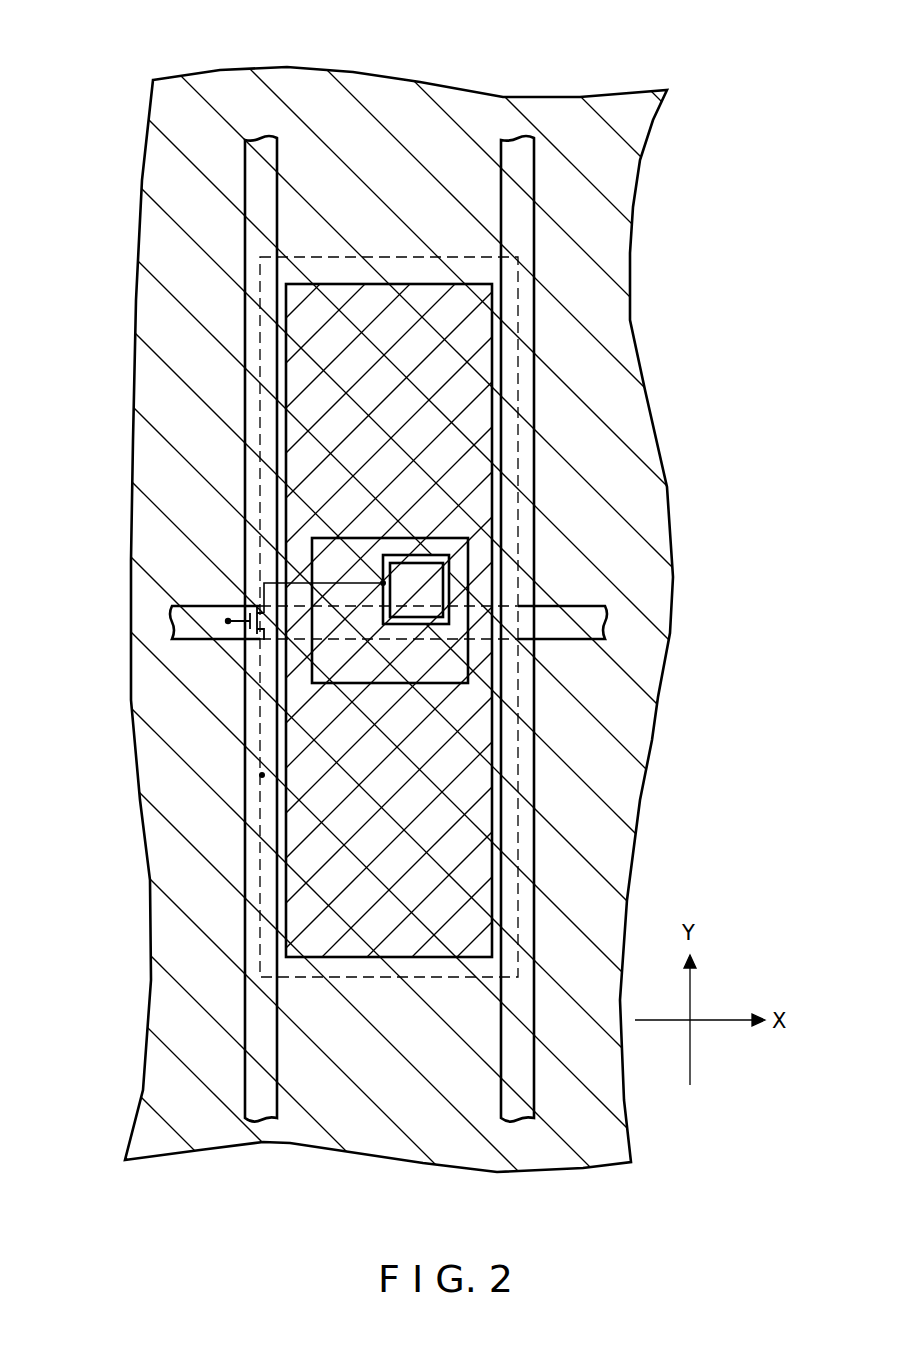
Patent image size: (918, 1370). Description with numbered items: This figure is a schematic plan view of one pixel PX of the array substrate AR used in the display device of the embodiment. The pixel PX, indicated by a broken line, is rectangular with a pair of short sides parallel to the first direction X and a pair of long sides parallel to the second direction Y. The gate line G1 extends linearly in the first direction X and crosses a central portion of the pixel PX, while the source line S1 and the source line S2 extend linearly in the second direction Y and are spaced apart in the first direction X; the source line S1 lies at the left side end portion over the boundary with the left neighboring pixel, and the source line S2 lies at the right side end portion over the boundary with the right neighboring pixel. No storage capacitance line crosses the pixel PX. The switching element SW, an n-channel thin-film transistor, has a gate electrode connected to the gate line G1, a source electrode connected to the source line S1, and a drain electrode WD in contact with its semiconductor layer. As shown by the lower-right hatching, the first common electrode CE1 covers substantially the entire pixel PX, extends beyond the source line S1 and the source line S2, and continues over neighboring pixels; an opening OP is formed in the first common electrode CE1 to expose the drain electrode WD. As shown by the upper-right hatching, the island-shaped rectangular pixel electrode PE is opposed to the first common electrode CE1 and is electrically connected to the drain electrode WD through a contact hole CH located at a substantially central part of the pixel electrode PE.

The source line S1 is at (265, 138).
The source line S2 is at (519, 138).
The gate line G1 is at (172, 622).
The pixel PX is at (527, 253).
The array substrate AR is at (655, 246).
The pixel electrode PE is at (475, 392).
The first common electrode CE1 is at (670, 511).
The switching element SW is at (253, 598).
The drain electrode WD is at (449, 573).
The contact hole CH is at (437, 592).
The opening OP is at (468, 683).